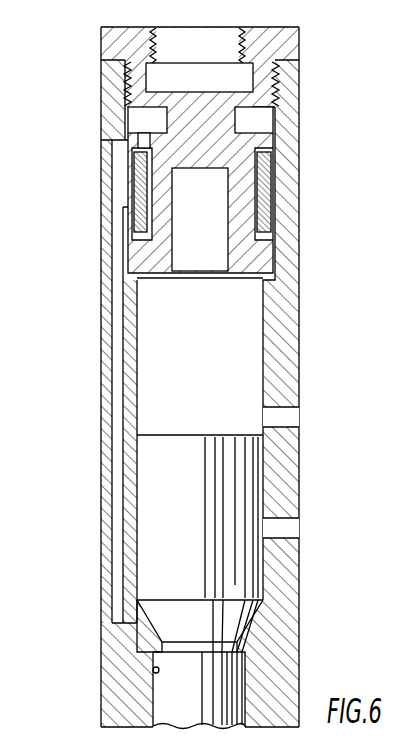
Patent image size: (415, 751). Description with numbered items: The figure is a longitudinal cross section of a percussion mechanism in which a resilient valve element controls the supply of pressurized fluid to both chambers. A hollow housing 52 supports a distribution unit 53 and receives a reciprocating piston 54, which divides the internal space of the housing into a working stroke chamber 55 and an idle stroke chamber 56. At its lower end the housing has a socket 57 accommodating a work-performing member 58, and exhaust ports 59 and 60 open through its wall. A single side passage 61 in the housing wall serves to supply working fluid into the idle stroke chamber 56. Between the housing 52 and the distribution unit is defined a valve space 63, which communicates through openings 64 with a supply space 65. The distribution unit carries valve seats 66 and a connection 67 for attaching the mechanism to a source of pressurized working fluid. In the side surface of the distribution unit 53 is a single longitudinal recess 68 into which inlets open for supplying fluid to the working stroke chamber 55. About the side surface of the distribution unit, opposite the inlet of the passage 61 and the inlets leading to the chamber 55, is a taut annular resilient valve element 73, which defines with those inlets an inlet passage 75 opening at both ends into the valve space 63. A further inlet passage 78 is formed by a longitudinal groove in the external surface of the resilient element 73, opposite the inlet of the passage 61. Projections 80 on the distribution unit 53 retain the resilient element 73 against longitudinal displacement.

The hollow housing 52 is at (103, 342).
The distribution unit 53 is at (270, 137).
The reciprocating piston 54 is at (147, 458).
The working stroke chamber 55 is at (257, 312).
The idle stroke chamber 56 is at (257, 633).
The socket 57 is at (150, 668).
The work-performing member 58 is at (163, 700).
The exhaust port 59 is at (283, 418).
The exhaust port 60 is at (285, 530).
The side passage 61 is at (125, 292).
The valve space 63 is at (135, 117).
The openings 64 is at (125, 93).
The supply space 65 is at (247, 80).
The valve seats 66 is at (125, 202).
The connection 67 is at (300, 37).
The longitudinal recess 68 is at (147, 138).
The resilient valve element 73 is at (270, 216).
The inlet passage 75 is at (150, 236).
The inlet passage 78 is at (130, 176).
The projections 80 is at (280, 154).